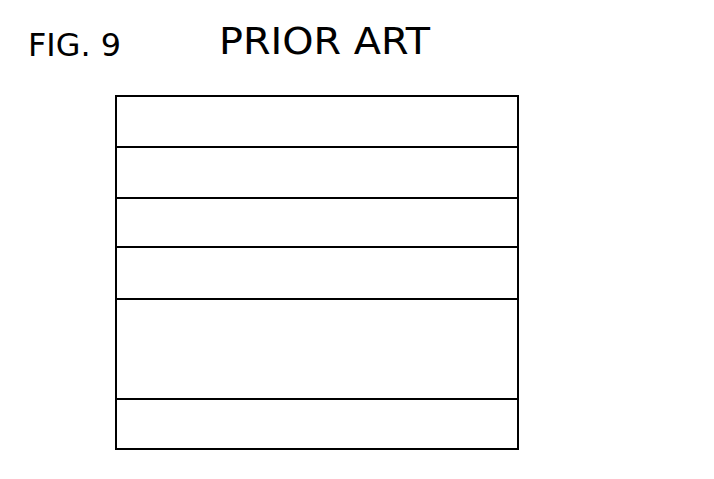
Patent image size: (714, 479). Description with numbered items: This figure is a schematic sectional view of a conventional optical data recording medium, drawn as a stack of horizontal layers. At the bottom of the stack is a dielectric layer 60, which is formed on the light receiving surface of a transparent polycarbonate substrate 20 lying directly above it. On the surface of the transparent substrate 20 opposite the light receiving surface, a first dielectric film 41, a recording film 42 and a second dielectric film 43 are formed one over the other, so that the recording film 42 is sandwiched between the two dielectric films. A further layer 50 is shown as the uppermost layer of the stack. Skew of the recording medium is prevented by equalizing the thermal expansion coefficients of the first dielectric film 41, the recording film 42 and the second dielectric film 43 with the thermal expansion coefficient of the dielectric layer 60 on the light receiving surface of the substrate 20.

The upper layer 50 is at (505, 129).
The second dielectric film 43 is at (505, 178).
The recording film 42 is at (505, 233).
The first dielectric film 41 is at (505, 285).
The transparent polycarbonate substrate 20 is at (505, 380).
The dielectric layer 60 is at (505, 430).